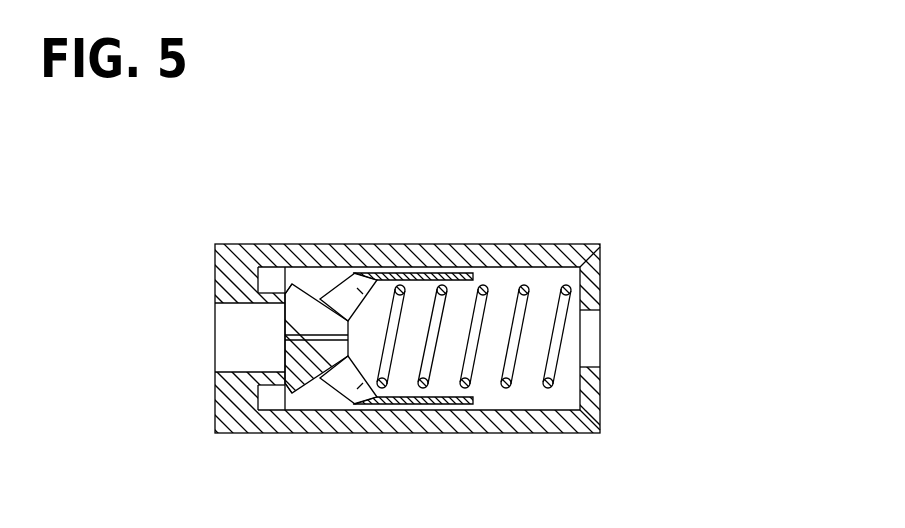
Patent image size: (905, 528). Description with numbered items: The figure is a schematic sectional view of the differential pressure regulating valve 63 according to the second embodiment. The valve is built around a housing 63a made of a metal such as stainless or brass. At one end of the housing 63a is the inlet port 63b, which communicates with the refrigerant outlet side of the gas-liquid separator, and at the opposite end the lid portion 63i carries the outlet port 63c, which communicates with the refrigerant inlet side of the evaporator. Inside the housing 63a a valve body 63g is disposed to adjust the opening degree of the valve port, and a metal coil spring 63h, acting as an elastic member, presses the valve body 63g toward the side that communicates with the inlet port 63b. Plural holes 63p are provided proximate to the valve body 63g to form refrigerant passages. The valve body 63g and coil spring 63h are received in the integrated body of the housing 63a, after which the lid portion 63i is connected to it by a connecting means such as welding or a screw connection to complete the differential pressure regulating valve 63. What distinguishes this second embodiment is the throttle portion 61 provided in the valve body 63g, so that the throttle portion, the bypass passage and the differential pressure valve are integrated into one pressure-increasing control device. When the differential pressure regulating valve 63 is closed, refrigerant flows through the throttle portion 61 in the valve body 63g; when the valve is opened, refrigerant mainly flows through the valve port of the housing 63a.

The differential pressure regulating valve 63 is at (410, 329).
The housing 63a is at (370, 254).
The inlet port 63b is at (250, 323).
The outlet port 63c is at (590, 337).
The valve body 63g is at (297, 292).
The coil spring 63h is at (517, 362).
The lid portion 63i is at (593, 383).
The holes 63p is at (342, 291).
The throttle portion 61 is at (300, 350).